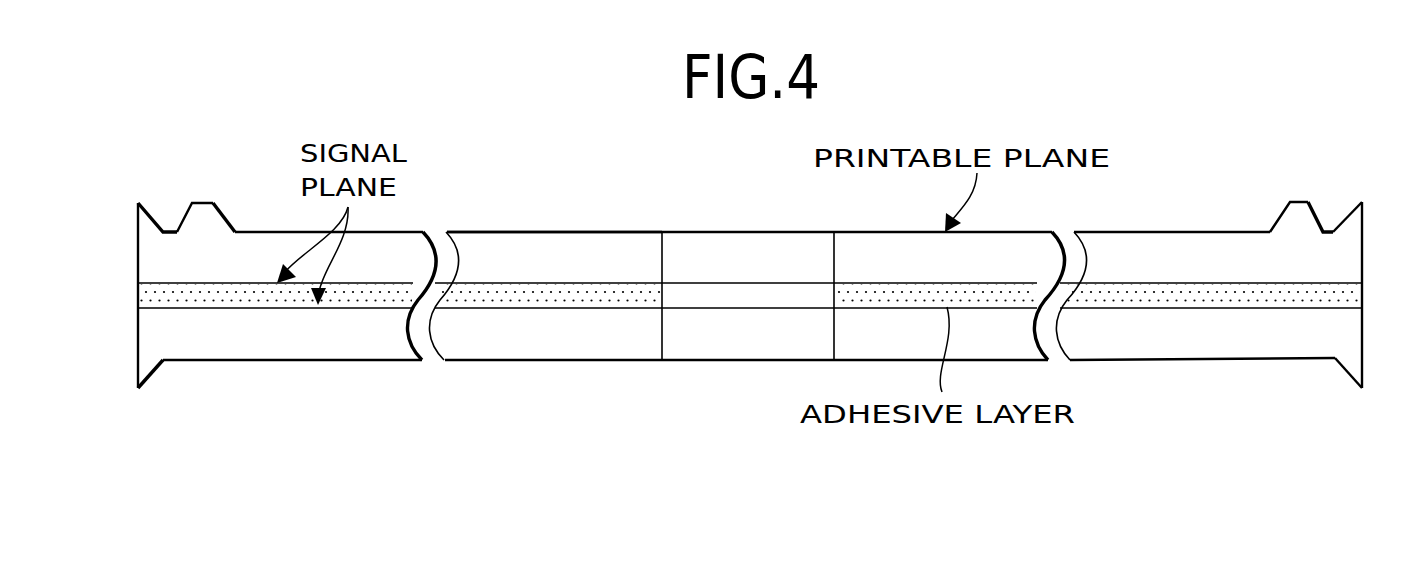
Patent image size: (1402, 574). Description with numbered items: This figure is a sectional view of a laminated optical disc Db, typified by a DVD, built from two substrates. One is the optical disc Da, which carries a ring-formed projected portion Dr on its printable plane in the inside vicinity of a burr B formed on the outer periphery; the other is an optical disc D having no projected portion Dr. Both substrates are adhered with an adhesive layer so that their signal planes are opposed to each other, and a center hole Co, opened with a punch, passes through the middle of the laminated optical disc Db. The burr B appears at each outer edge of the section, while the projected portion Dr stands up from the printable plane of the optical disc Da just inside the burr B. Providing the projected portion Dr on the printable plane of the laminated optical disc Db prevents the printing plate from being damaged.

The burr B is at (138, 203).
The projected portion Dr is at (199, 202).
The optical disc Da is at (567, 220).
The center hole Co is at (833, 252).
The optical disc D is at (750, 308).
The laminated optical disc Db is at (468, 428).